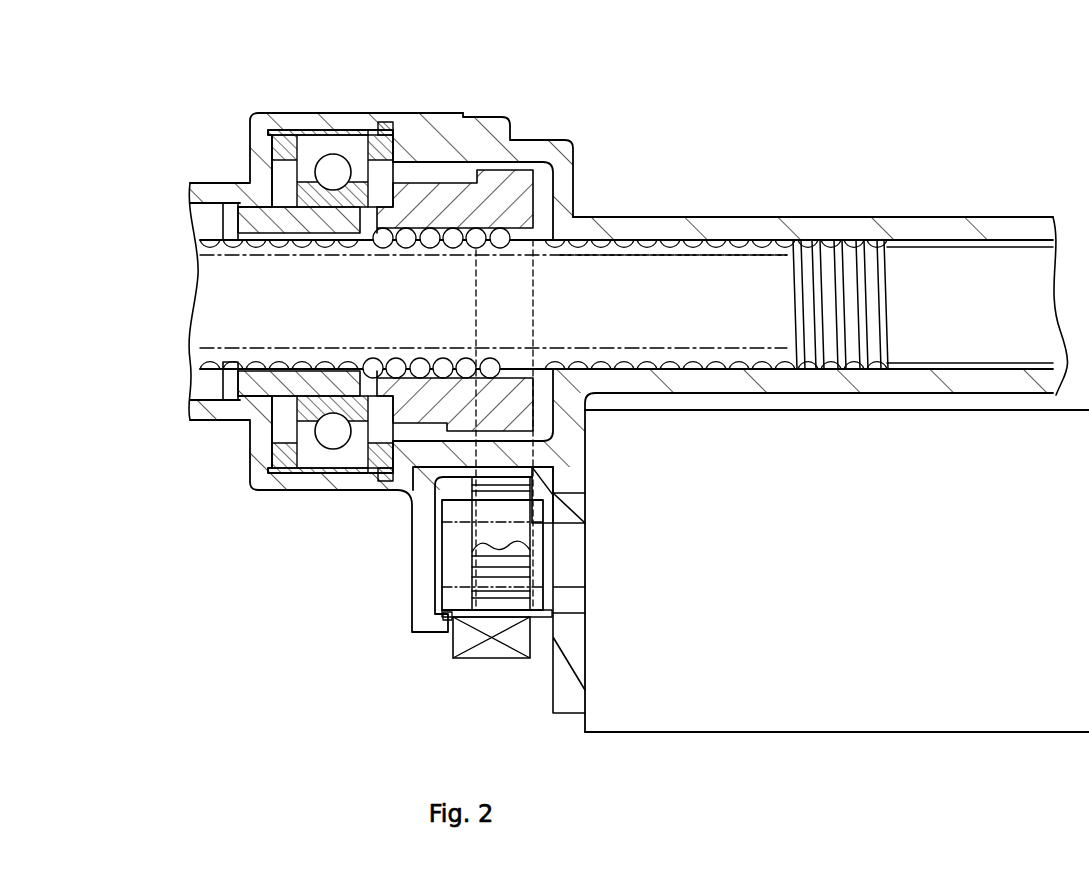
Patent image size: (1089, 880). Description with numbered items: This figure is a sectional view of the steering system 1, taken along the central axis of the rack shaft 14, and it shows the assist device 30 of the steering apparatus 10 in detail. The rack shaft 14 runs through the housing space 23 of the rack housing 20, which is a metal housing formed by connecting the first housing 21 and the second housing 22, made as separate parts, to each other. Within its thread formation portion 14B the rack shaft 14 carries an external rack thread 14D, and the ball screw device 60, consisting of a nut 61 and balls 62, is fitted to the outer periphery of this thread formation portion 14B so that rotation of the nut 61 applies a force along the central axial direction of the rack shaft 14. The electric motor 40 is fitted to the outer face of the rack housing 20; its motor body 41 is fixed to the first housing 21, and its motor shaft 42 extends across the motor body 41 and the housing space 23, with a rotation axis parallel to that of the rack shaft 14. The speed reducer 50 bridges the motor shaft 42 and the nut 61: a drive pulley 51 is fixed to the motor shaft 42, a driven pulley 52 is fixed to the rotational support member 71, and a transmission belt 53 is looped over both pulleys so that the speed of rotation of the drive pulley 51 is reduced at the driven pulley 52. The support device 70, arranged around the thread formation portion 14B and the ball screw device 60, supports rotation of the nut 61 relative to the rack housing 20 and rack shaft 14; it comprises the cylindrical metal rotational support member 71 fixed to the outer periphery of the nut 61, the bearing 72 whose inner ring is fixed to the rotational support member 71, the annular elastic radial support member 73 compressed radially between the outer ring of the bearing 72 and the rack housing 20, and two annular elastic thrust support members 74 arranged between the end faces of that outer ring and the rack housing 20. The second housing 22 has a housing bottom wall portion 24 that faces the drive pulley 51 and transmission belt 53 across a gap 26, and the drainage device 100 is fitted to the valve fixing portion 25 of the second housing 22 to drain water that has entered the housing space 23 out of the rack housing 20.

The actuator device 1 is at (138, 74).
The shaft assembly 10 is at (802, 150).
The rack shaft 14 is at (898, 240).
The thread formation portion 14B is at (733, 256).
The rack thread 14D is at (791, 240).
The rack housing 20 is at (505, 74).
The first housing 21 is at (486, 117).
The second housing 22 is at (432, 117).
The housing space 23 is at (988, 235).
The housing bottom wall portion 24 is at (420, 636).
The valve fixing portion 25 is at (447, 638).
The gap 26 is at (440, 612).
The assist device 30 is at (256, 92).
The electric motor 40 is at (748, 734).
The motor body 41 is at (650, 734).
The motor shaft 42 is at (585, 558).
The speed reducer 50 is at (360, 500).
The drive pulley 51 is at (455, 568).
The driven pulley 52 is at (470, 480).
The transmission belt 53 is at (452, 522).
The ball screw device 60 is at (392, 283).
The nut 61 is at (438, 248).
The balls 62 is at (442, 374).
The support device 70 is at (252, 272).
The rotational support member 71 is at (289, 242).
The bearing 72 is at (323, 140).
The radial support member 73 is at (304, 128).
The thrust support member 74 is at (388, 122).
The drainage device 100 is at (493, 660).